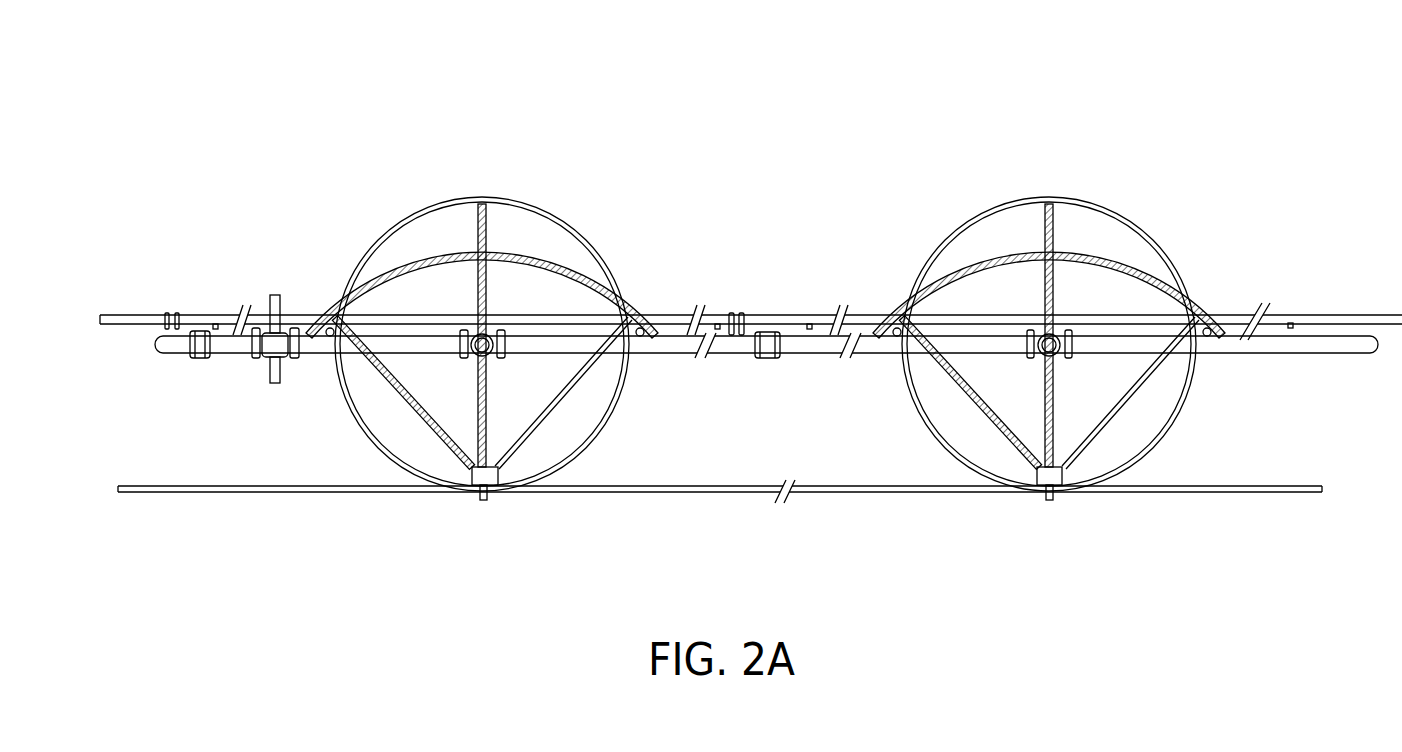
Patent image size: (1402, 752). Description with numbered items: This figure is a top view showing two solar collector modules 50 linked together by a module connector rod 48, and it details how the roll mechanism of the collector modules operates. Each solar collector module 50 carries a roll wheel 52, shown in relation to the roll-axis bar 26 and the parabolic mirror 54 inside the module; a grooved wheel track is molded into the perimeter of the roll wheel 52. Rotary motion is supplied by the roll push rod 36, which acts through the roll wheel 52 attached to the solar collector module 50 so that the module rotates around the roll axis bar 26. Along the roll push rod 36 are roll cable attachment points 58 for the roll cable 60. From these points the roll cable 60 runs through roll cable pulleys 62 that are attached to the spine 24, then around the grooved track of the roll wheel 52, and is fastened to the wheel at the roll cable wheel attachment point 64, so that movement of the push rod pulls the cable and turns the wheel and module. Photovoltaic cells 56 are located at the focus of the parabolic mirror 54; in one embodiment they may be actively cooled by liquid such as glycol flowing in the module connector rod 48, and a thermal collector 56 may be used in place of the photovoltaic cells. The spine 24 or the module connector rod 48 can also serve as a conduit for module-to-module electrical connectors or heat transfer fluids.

The spine 24 is at (766, 365).
The roll-axis bar 26 is at (1058, 356).
The roll push rod 36 is at (1317, 322).
The module connector rod 48 is at (1273, 486).
The solar collector module 50 is at (767, 296).
The roll wheel 52 is at (1121, 218).
The parabolic mirror 54 is at (983, 262).
The photo voltaic cells 56 is at (1058, 485).
The roll cable attachment point 58 is at (215, 324).
The roll cable 60 is at (612, 432).
The roll cable pulley 62 is at (330, 336).
The roll cable wheel attachment point 64 is at (483, 500).